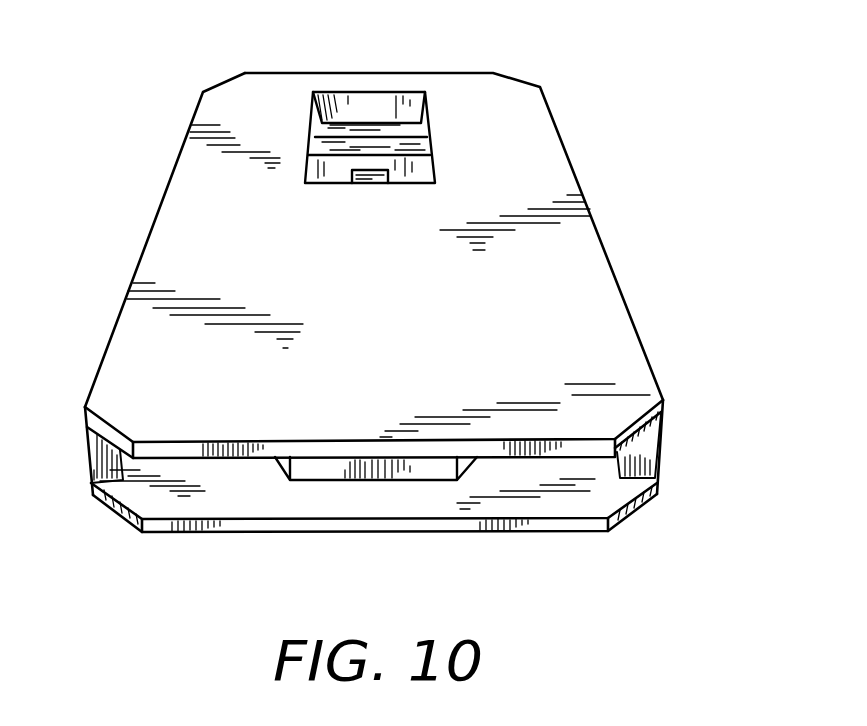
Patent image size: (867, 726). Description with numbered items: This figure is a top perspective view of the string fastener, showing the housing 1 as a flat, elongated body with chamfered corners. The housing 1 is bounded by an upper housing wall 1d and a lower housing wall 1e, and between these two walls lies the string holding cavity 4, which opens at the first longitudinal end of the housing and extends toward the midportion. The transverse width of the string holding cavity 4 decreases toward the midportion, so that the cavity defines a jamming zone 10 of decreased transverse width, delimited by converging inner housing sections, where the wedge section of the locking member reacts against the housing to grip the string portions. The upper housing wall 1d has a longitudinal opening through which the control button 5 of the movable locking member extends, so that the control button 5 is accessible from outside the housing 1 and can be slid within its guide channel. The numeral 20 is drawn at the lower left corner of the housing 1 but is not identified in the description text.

The housing 1 is at (383, 328).
The jamming zone 10 is at (428, 122).
The control button 5 is at (423, 145).
The upper housing wall 1d is at (560, 422).
The lower housing wall 1e is at (547, 502).
The string holding cavity 4 is at (227, 476).
The assembly 20 is at (116, 521).